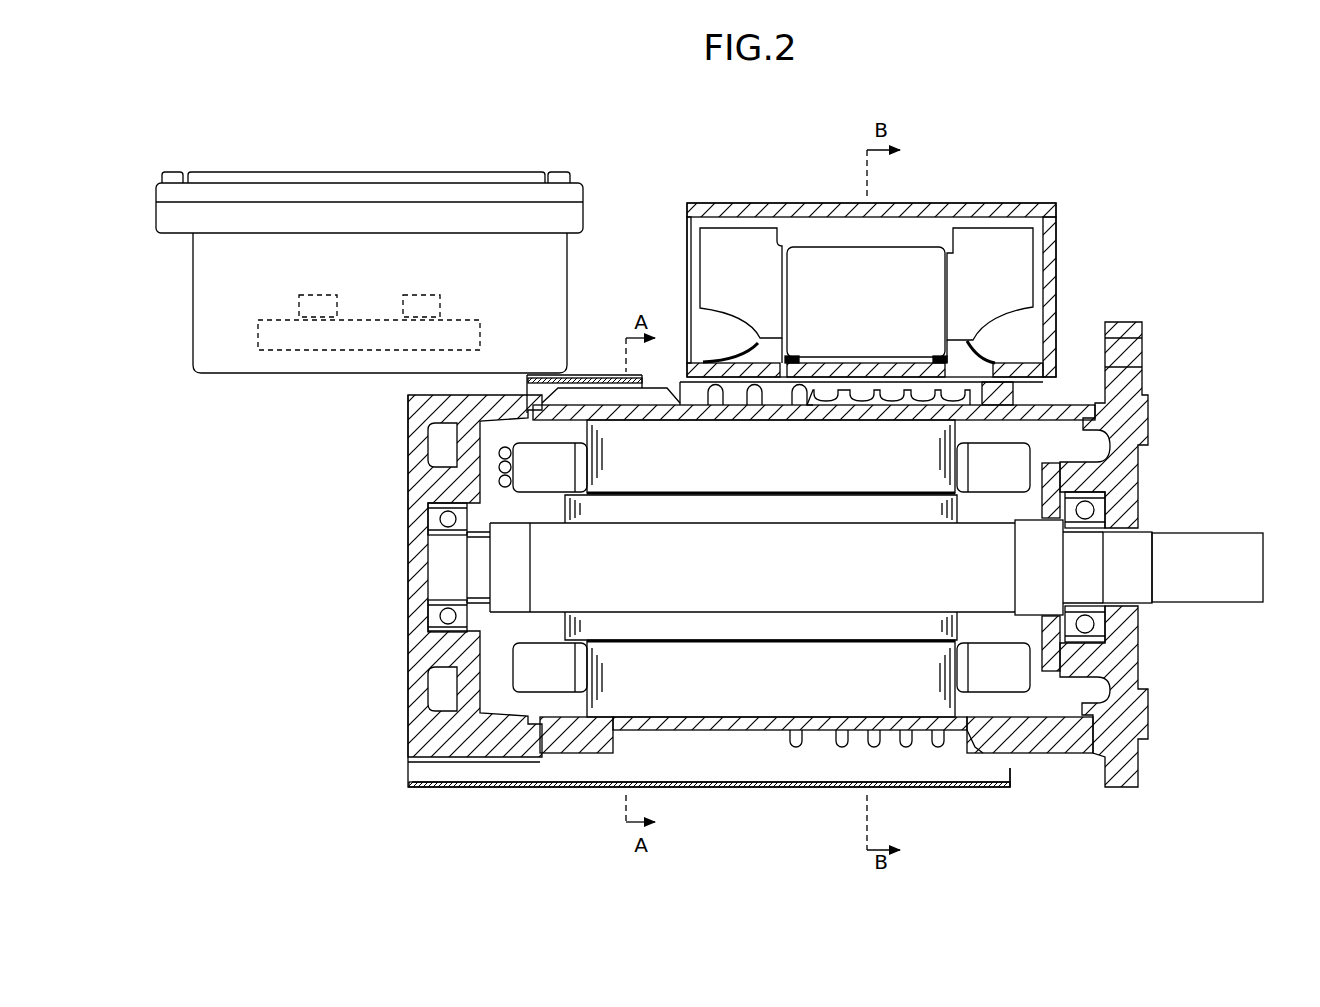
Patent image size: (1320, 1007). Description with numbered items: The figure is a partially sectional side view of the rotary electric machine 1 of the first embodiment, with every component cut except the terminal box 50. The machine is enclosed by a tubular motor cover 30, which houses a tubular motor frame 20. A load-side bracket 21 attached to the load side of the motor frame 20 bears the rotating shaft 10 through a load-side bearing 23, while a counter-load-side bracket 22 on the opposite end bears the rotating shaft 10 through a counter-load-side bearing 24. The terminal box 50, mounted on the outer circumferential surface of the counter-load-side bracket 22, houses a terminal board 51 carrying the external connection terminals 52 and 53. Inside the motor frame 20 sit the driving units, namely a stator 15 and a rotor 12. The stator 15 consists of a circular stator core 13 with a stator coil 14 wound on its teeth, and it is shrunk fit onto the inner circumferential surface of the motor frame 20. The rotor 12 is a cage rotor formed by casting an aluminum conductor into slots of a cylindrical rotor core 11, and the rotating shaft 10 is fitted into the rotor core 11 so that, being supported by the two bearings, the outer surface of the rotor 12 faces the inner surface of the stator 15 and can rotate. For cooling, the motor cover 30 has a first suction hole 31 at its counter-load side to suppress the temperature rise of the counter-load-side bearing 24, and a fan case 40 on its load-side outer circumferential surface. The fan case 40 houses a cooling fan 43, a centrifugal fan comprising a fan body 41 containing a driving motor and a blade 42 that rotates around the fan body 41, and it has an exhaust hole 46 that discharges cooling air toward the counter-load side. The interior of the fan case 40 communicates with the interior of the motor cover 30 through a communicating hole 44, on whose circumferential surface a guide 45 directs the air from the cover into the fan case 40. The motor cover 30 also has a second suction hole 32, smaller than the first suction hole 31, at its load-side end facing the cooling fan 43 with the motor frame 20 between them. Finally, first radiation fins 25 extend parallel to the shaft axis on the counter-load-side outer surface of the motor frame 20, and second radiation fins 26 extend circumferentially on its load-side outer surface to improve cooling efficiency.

The rotary electric machine 1 is at (588, 106).
The rotating shaft 10 is at (540, 572).
The rotor core 11 is at (565, 505).
The rotor 12 is at (345, 543).
The stator core 13 is at (615, 705).
The stator coil 14 is at (557, 680).
The stator 15 is at (525, 848).
The motor frame 20 is at (712, 727).
The load-side bracket 21 is at (1140, 422).
The counter-load-side bracket 22 is at (420, 478).
The load-side bearing 23 is at (1095, 621).
The counter-load-side bearing 24 is at (440, 616).
The first radiation fins 25 is at (598, 398).
The second radiation fins 26 is at (830, 396).
The motor cover 30 is at (468, 790).
The first suction hole 31 is at (518, 386).
The second suction hole 32 is at (1018, 764).
The fan case 40 is at (1048, 212).
The fan body 41 is at (915, 262).
The blade 42 is at (978, 243).
The cooling fan 43 is at (1010, 152).
The communicating hole 44 is at (768, 366).
The guide 45 is at (990, 358).
The exhaust hole 46 is at (683, 269).
The terminal box 50 is at (228, 172).
The terminal board 51 is at (258, 332).
The external connection terminal 52 is at (318, 295).
The external connection terminal 53 is at (424, 295).